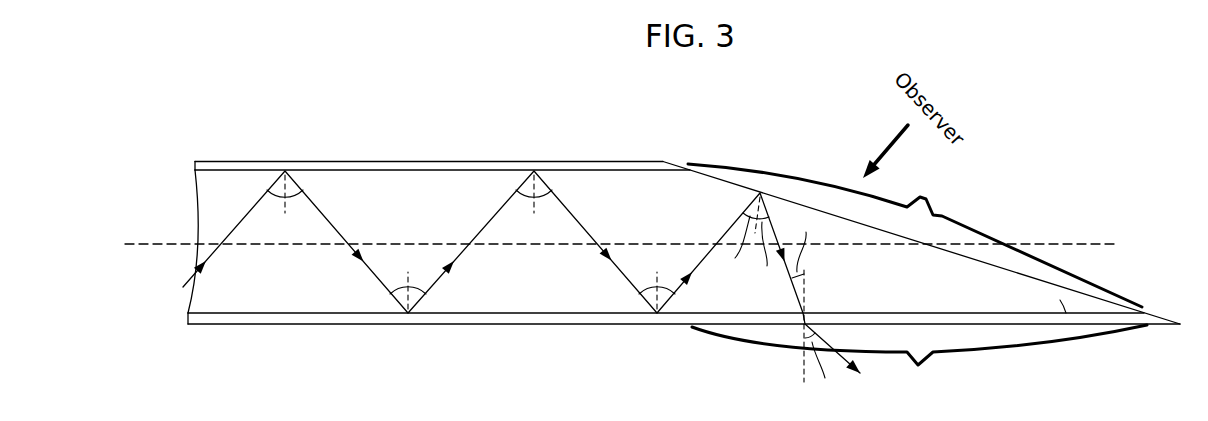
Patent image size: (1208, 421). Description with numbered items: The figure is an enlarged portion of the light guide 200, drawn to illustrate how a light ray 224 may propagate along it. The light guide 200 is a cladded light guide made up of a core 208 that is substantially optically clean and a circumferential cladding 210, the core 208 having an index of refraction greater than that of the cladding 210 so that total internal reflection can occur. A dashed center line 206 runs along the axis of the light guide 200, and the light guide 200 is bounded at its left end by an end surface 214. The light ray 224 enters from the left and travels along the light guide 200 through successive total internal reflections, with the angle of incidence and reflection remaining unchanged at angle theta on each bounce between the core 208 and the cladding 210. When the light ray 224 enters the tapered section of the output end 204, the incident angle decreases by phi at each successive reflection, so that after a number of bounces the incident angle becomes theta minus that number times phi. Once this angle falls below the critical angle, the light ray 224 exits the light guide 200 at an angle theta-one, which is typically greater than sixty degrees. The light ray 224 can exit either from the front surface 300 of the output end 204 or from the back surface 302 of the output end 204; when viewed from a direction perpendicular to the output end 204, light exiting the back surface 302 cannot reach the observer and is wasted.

The light guide 200 is at (392, 150).
The cladding 210 is at (222, 166).
The core 208 is at (330, 296).
The input end surface 214 is at (196, 168).
The output end 204 is at (713, 176).
The central optical axis 206 is at (641, 243).
The light ray 224 is at (607, 285).
The front surface 300 is at (915, 235).
The back surface 302 is at (919, 357).